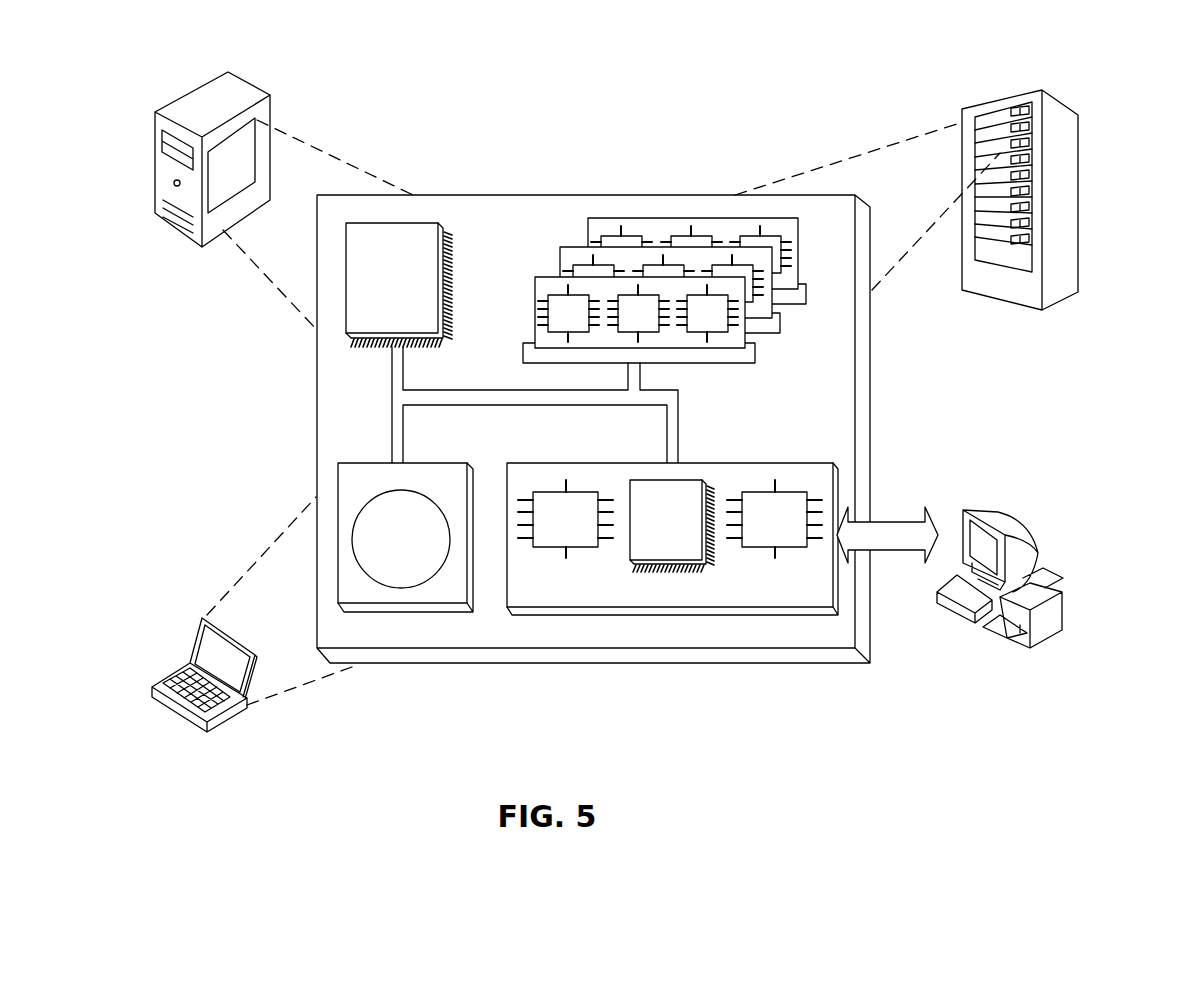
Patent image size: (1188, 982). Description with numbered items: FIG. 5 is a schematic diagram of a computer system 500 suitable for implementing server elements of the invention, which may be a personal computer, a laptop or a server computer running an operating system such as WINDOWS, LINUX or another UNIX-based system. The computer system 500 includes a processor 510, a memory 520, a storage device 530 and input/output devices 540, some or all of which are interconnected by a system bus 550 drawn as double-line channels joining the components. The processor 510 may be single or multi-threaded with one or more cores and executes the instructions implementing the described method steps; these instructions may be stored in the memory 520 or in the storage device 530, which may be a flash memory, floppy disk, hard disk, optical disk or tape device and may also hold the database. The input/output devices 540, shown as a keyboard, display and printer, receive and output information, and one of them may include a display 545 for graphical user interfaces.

The computer system 500 is at (467, 103).
The processor 510 is at (458, 298).
The memory 520 is at (797, 332).
The storage device 530 is at (437, 582).
The input/output devices 540 is at (957, 525).
The display 545 is at (990, 547).
The system bus 550 is at (537, 408).